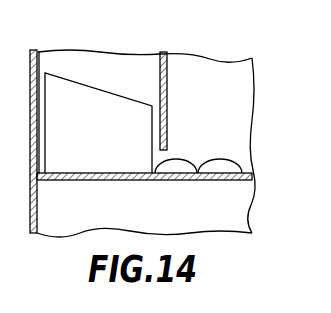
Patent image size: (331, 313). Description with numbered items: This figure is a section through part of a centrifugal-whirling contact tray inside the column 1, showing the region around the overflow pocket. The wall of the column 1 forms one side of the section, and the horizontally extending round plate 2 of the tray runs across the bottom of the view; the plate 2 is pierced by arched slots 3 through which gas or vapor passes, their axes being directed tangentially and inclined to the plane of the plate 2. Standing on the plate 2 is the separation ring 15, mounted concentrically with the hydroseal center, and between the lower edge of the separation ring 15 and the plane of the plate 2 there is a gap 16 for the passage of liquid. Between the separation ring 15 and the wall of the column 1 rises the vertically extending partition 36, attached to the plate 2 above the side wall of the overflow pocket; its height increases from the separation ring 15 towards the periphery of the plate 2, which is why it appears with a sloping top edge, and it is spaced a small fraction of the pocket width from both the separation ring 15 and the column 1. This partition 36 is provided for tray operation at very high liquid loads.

The column 1 is at (37, 207).
The round plate 2 is at (165, 180).
The arched slots 3 is at (193, 158).
The separation ring 15 is at (167, 100).
The gap 16 is at (162, 157).
The vertical partition 36 is at (127, 108).